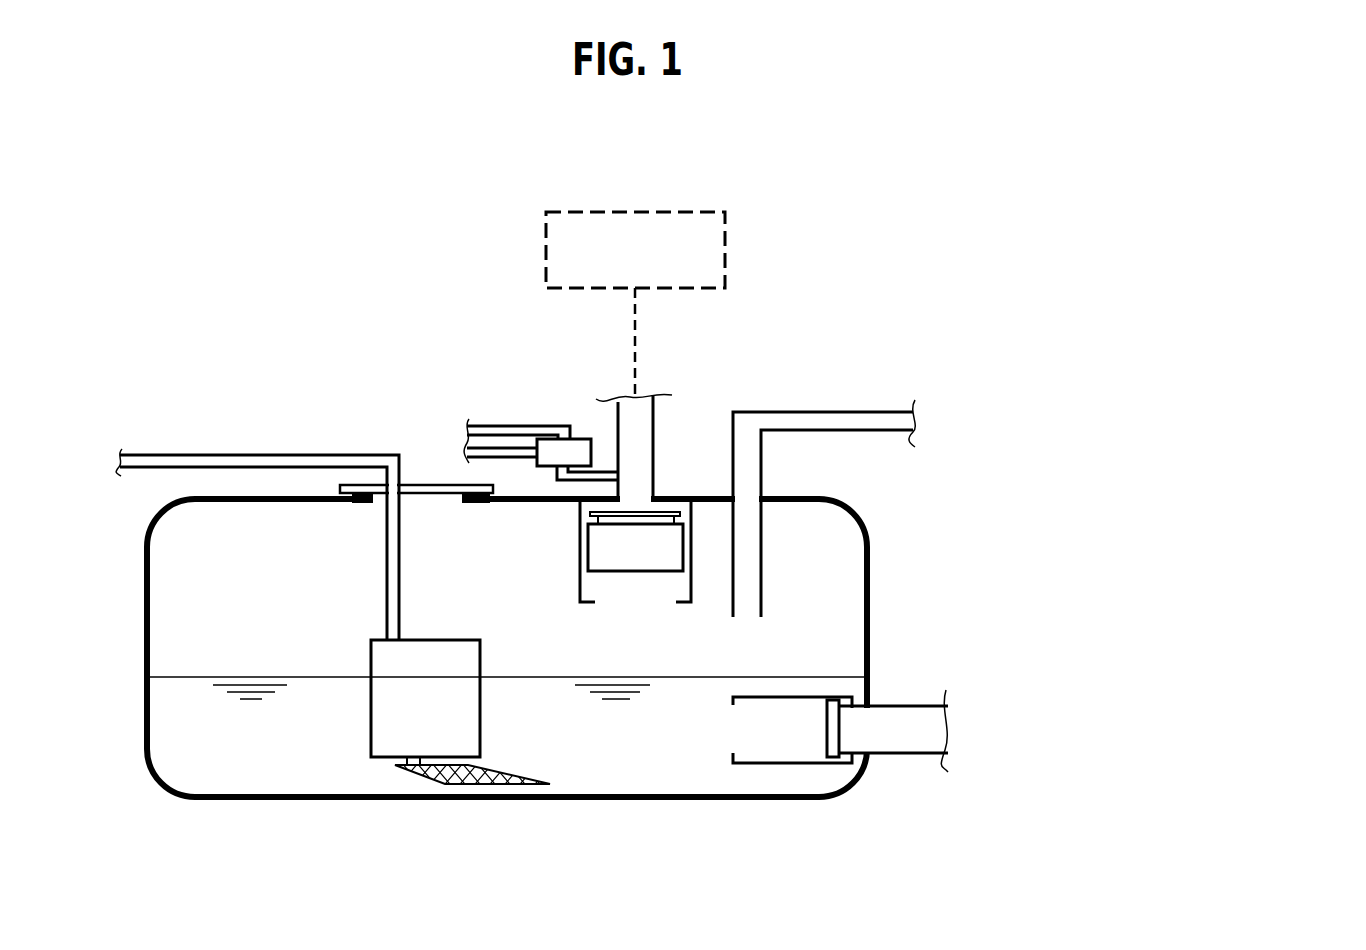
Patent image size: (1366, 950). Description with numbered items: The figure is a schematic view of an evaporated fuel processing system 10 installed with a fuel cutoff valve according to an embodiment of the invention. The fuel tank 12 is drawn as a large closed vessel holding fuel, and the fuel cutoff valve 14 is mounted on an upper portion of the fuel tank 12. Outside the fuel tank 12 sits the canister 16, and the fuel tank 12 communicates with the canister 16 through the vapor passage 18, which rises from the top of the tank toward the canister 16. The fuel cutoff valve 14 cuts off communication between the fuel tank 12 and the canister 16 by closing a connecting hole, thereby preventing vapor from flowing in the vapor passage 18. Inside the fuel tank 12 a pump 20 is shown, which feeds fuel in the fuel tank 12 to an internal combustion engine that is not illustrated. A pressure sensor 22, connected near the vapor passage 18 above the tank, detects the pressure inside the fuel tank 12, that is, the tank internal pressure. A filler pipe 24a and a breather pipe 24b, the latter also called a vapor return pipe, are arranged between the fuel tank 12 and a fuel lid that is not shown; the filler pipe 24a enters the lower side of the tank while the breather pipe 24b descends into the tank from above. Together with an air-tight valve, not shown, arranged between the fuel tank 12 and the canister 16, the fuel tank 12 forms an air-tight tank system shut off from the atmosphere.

The evaporated fuel processing system 10 is at (886, 232).
The fuel tank 12 is at (250, 800).
The fuel cutoff valve 14 is at (668, 622).
The canister 16 is at (643, 209).
The vapor passage 18 is at (653, 447).
The pump 20 is at (370, 730).
The pressure sensor 22 is at (586, 438).
The filler pipe 24a is at (907, 763).
The breather pipe 24b is at (840, 412).